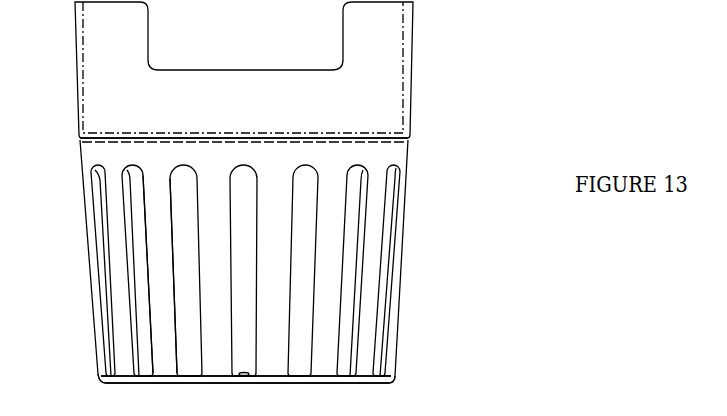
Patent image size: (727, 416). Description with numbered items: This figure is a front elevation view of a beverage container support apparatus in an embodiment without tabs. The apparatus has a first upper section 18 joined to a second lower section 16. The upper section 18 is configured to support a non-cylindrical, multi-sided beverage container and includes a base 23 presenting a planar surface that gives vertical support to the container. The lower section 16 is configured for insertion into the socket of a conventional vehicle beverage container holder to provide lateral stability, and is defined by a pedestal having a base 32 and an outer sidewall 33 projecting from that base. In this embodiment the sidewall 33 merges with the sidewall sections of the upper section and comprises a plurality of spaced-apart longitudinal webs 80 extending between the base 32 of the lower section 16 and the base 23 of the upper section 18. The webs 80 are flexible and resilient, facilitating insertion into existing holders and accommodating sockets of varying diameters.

The first upper section 18 is at (414, 86).
The base 23 is at (385, 143).
The outer sidewall 33 is at (286, 173).
The longitudinal webs 80 is at (158, 246).
The second lower section 16 is at (263, 270).
The base 32 is at (368, 385).